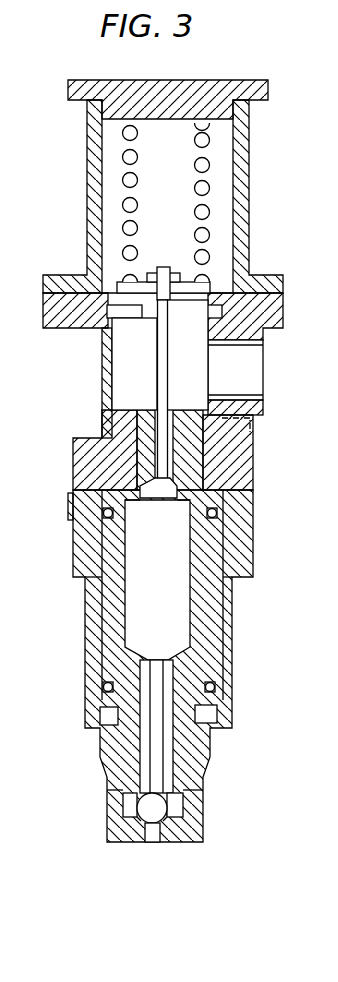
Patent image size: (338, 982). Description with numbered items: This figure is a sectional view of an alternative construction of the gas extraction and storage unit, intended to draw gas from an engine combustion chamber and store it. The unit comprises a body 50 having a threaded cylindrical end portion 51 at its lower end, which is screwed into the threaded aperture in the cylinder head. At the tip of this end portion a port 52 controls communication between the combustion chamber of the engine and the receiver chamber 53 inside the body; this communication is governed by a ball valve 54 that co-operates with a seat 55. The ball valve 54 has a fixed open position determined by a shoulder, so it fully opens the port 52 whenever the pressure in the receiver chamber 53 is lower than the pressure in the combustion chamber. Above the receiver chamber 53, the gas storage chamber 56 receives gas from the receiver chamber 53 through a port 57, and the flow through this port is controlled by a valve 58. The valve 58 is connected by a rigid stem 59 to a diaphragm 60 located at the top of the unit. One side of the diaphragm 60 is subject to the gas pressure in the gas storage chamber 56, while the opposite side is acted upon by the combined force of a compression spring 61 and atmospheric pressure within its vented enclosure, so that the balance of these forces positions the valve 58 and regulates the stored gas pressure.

The body 50 is at (238, 697).
The threaded cylindrical end portion 51 is at (104, 813).
The port 52 is at (150, 842).
The receiver chamber 53 is at (174, 608).
The ball valve 54 is at (160, 810).
The seat 55 is at (165, 825).
The gas storage chamber 56 is at (134, 388).
The port 57 is at (178, 508).
The valve 58 is at (149, 508).
The rigid stem 59 is at (156, 355).
The diaphragm 60 is at (220, 282).
The compression spring 61 is at (213, 185).